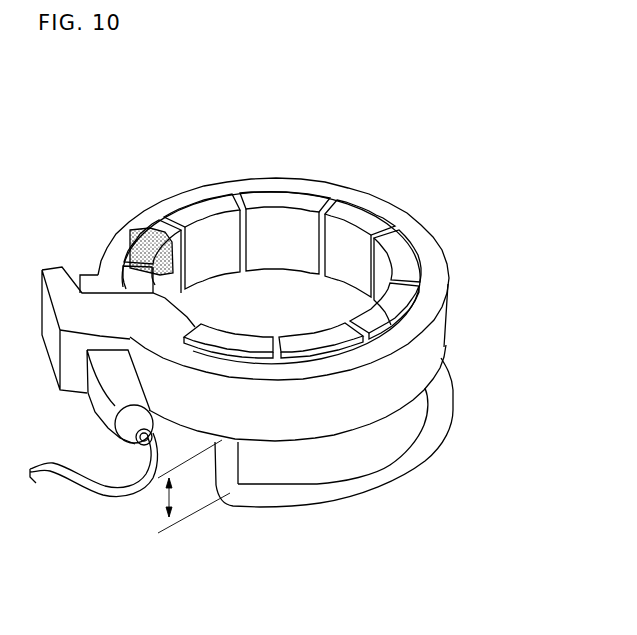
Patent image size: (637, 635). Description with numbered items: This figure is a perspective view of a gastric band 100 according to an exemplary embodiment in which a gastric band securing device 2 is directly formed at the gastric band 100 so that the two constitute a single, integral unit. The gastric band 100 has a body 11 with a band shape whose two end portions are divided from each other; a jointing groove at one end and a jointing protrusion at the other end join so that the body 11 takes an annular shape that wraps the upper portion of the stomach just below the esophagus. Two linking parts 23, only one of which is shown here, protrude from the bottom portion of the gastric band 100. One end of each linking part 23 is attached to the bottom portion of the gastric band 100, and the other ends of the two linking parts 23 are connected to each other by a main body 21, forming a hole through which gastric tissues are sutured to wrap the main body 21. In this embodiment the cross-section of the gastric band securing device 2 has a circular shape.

The gastric band 100 is at (241, 358).
The body 11 is at (120, 235).
The gastric band securing device 2 is at (334, 491).
The main body 21 is at (317, 493).
The linking part 23 is at (232, 458).